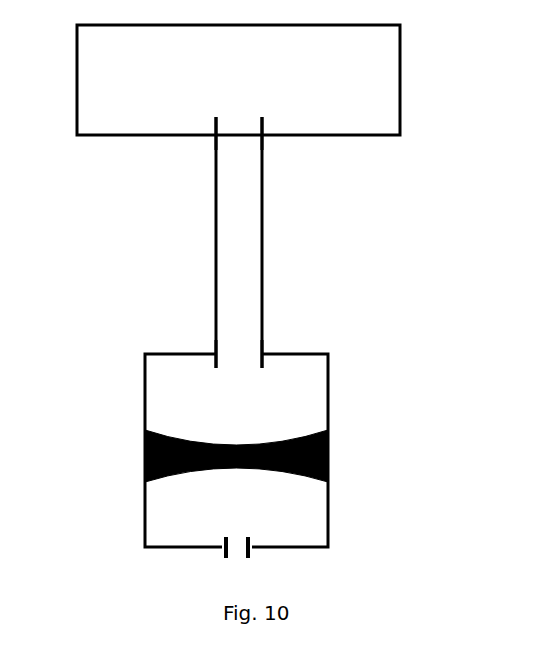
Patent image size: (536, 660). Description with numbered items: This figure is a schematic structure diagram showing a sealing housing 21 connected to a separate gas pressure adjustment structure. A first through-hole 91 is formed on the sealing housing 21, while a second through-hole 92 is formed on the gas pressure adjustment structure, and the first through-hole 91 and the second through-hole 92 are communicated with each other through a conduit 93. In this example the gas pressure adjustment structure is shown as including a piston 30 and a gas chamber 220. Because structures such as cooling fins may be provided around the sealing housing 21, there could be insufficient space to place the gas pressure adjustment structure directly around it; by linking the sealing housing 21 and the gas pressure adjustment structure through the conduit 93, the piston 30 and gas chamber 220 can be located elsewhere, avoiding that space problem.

The sealing housing 21 is at (308, 100).
The first through-hole 91 is at (243, 134).
The conduit 93 is at (233, 245).
The second through-hole 92 is at (245, 355).
The piston 30 is at (145, 455).
The gas chamber 220 is at (330, 502).